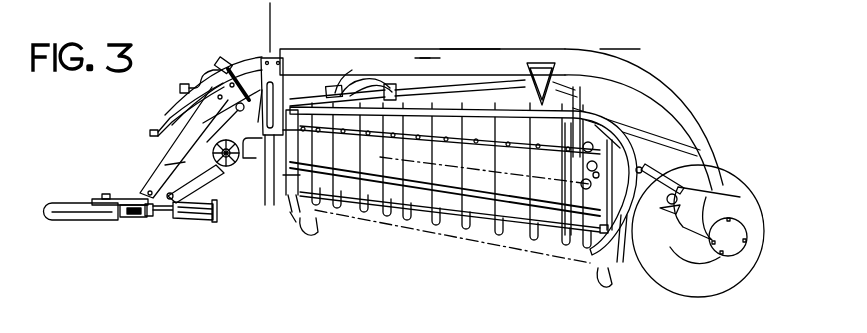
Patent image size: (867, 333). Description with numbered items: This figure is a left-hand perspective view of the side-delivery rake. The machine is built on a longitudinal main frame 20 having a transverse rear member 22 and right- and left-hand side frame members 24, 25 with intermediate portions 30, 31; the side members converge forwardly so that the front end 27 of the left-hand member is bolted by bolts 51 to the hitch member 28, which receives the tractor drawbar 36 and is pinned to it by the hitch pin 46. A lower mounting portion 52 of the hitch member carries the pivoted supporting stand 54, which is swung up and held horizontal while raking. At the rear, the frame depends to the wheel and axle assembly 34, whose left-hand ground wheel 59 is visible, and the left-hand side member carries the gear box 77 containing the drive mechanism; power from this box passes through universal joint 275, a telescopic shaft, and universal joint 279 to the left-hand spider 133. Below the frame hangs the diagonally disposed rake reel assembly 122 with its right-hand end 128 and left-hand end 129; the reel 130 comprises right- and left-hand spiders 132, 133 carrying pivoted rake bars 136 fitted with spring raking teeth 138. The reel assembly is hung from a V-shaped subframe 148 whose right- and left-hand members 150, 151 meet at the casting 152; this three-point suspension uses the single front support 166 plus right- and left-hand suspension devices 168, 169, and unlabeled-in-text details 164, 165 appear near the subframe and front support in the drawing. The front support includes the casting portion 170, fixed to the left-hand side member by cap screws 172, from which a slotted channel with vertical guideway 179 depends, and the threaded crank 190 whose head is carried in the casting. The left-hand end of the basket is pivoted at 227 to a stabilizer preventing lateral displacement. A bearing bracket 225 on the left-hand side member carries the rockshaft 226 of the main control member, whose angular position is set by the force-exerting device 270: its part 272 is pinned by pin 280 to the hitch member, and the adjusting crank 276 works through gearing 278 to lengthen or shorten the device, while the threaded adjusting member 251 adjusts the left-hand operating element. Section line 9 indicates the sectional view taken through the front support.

The section line 9 is at (288, 17).
The main frame 20 is at (675, 80).
The transverse rear member 22 is at (684, 140).
The right-hand side frame member 24 is at (482, 52).
The left-hand side frame member 25 is at (637, 66).
The front end of left-hand frame member 27 is at (156, 182).
The hitch member 28 is at (120, 224).
The intermediate portion of right-hand member 30 is at (461, 50).
The intermediate portion of left-hand member 31 is at (426, 58).
The wheel and axle assembly 34 is at (722, 290).
The drawbar 36 is at (73, 221).
The hitch pin 46 is at (106, 192).
The bolts 51 is at (152, 212).
The lower mounting portion 52 is at (144, 216).
The supporting stand 54 is at (200, 220).
The left-hand ground wheel 59 is at (740, 268).
The gear box 77 is at (740, 248).
The rake reel assembly 122 is at (602, 116).
The right-hand end of reel assembly 128 is at (500, 110).
The left-hand end of reel assembly 129 is at (617, 135).
The reel 130 is at (297, 210).
The right-hand spider 132 is at (281, 207).
The left-hand spider 133 is at (623, 240).
The rake bars 136 is at (480, 237).
The spring raking teeth 138 is at (312, 232).
The subframe 148 is at (335, 72).
The right-hand subframe member 150 is at (352, 90).
The left-hand subframe member 151 is at (455, 90).
The casting 152 is at (290, 110).
The hose 164 is at (345, 88).
The bracket 165 is at (390, 86).
The front support 166 is at (248, 57).
The right-hand suspension device 168 is at (423, 58).
The left-hand suspension device 169 is at (568, 80).
The casting portion 170 is at (255, 68).
The cap screws 172 is at (277, 60).
The left-hand vertical guideway 179 is at (262, 124).
The crank 190 is at (260, 168).
The bearing bracket 225 is at (218, 92).
The rockshaft 226 is at (236, 107).
The pivot 227 is at (660, 182).
The adjusting member 251 is at (180, 89).
The force-exerting device 270 is at (218, 202).
The part of force-exerting device 272 is at (192, 190).
The universal joint 275 is at (667, 215).
The adjusting crank 276 is at (150, 132).
The gearing 278 is at (213, 153).
The universal joint 279 is at (648, 192).
The pin 280 is at (165, 165).